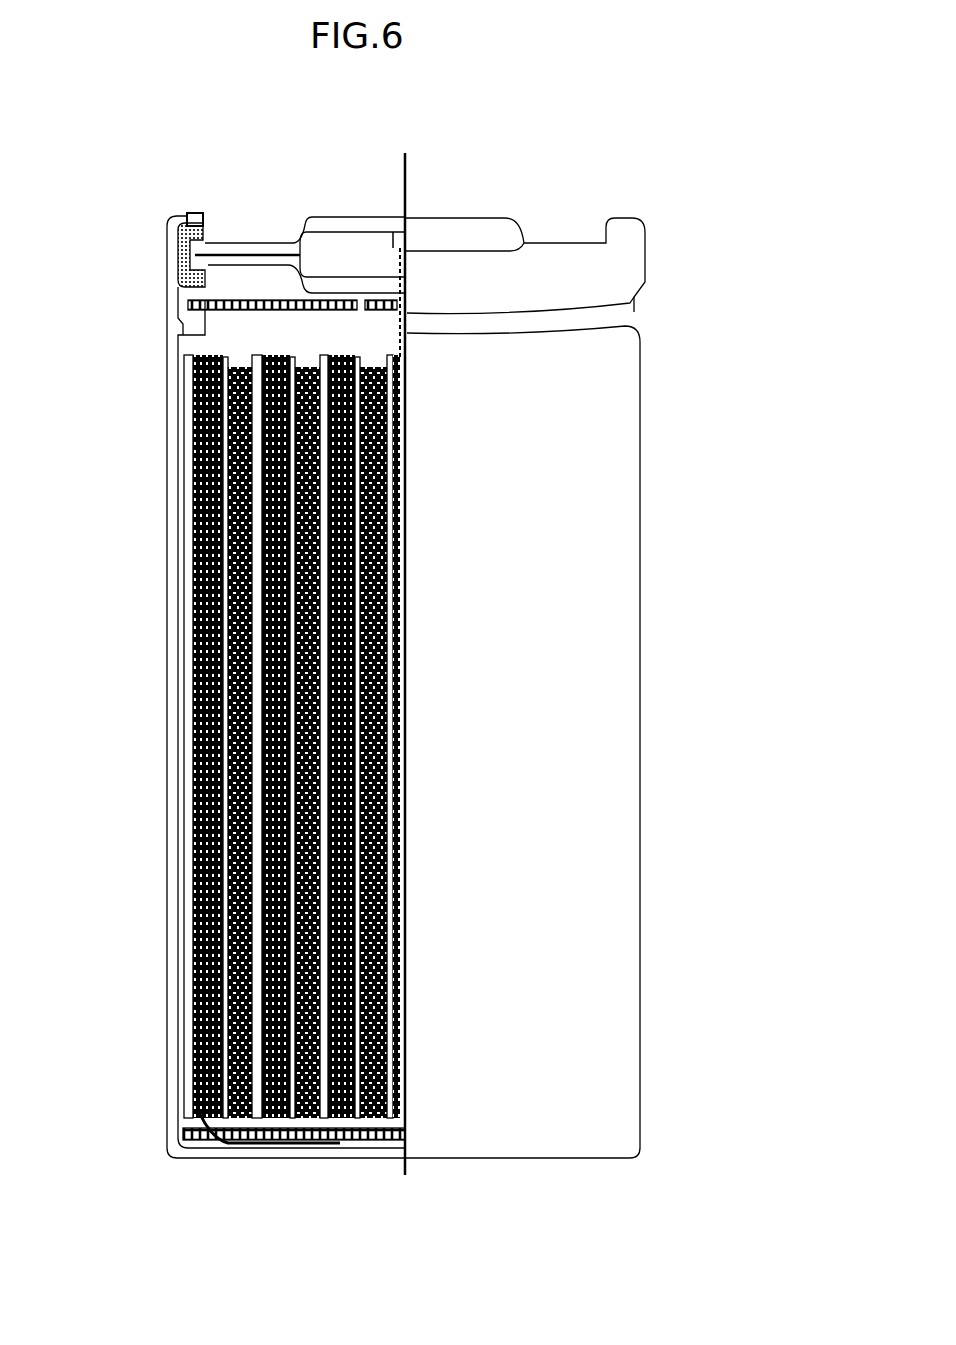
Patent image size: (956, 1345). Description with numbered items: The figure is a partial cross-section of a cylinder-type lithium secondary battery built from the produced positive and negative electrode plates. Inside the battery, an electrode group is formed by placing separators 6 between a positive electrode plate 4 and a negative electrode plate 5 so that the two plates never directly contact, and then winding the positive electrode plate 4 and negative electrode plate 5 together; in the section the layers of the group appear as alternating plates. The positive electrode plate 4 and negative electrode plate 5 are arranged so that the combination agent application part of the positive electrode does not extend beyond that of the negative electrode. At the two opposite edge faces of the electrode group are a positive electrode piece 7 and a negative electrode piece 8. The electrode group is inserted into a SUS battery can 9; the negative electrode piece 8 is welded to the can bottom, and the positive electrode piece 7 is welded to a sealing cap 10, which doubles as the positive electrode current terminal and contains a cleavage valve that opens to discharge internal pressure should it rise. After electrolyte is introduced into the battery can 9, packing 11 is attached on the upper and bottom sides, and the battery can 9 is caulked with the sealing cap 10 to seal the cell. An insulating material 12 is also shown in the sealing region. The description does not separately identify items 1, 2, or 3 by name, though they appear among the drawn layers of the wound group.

The positive electrode 1 is at (193, 398).
The negative electrode 2 is at (198, 418).
The separator 3 is at (195, 532).
The positive electrode plate 4 is at (196, 568).
The negative electrode plate 5 is at (188, 685).
The separators 6 is at (237, 1143).
The positive electrode piece 7 is at (330, 1140).
The negative electrode piece 8 is at (369, 280).
The battery can 9 is at (185, 302).
The sealing cap 10 is at (173, 260).
The packing 11 is at (222, 245).
The insulating material 12 is at (187, 216).